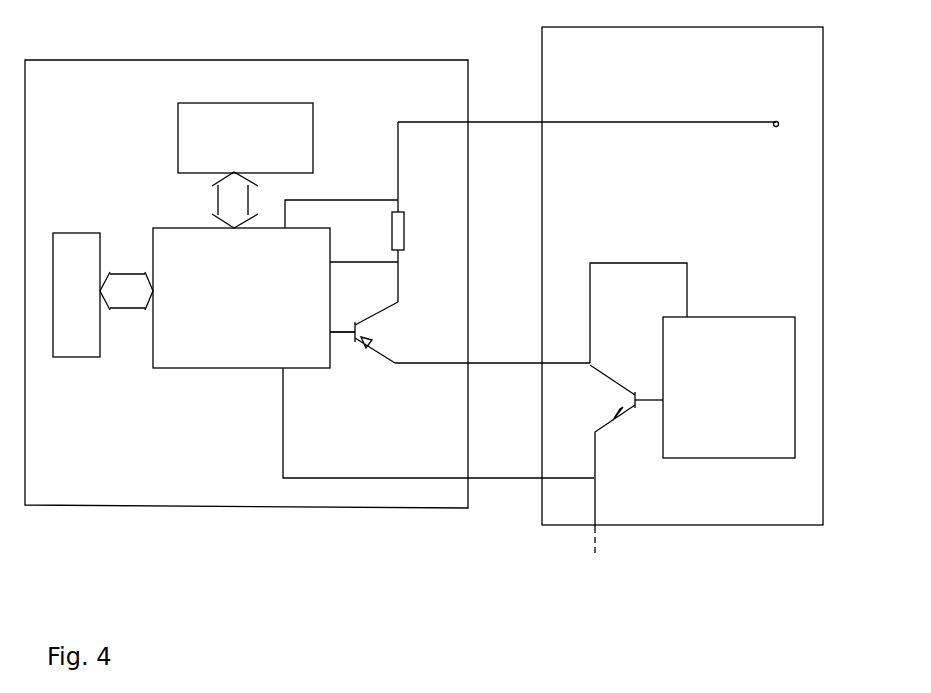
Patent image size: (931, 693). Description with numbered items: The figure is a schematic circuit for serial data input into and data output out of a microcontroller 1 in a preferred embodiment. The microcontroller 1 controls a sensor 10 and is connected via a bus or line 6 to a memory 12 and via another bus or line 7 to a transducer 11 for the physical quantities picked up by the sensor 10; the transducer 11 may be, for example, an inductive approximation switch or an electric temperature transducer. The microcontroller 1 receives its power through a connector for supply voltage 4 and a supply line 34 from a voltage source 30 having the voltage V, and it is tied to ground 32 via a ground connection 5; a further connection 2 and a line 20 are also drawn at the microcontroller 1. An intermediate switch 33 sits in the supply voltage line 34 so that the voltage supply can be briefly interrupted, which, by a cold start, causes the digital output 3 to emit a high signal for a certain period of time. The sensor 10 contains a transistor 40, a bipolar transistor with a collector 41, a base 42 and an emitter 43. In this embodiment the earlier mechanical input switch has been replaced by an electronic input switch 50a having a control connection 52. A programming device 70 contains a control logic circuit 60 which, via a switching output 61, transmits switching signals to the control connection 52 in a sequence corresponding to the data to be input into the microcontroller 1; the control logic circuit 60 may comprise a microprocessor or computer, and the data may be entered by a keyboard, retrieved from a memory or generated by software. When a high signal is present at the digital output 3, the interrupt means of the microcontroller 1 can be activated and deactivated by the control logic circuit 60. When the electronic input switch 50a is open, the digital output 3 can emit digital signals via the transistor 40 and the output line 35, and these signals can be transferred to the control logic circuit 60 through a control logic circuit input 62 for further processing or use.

The microcontroller 1 is at (241, 298).
The microcontroller output pin 2 is at (353, 273).
The digital output 3 is at (332, 336).
The connector for supply voltage 4 is at (336, 232).
The ground connection 5 is at (434, 411).
The bus or line 6 is at (127, 292).
The bus or line 7 is at (226, 203).
The sensor 10 is at (115, 137).
The transducer 11 is at (310, 128).
The memory 12 is at (75, 250).
The resistor 20 is at (403, 232).
The voltage source 30 is at (776, 121).
The ground 32 is at (586, 563).
The intermediate switch 33 is at (681, 130).
The supply line 34 is at (610, 125).
The output line 35 is at (500, 375).
The transistor 40 is at (365, 330).
The collector 41 is at (390, 312).
The base 42 is at (352, 336).
The emitter 43 is at (381, 360).
The electronic input switch 50a is at (630, 398).
The control connection 52 is at (645, 405).
The control logic circuit 60 is at (763, 377).
The switching output 61 is at (669, 404).
The control logic circuit input 62 is at (687, 339).
The programming device 70 is at (614, 93).